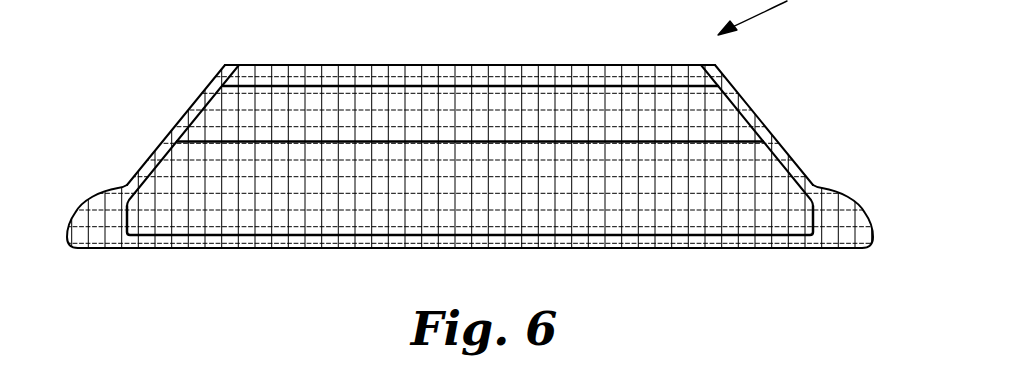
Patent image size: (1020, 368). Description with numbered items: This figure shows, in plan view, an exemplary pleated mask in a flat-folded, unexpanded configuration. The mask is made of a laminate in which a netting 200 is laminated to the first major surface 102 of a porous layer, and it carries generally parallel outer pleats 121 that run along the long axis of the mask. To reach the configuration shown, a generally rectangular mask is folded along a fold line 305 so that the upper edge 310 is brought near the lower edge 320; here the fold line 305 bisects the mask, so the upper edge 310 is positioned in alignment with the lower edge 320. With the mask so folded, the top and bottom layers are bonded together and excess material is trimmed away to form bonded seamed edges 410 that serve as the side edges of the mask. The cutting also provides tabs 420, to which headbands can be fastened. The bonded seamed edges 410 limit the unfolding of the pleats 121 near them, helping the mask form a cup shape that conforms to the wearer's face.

The first major surface 102 is at (478, 223).
The outer pleats 121 is at (697, 88).
The netting 200 is at (622, 210).
The fold line 305 is at (563, 64).
The upper edge 310 is at (187, 240).
The lower edge 320 is at (266, 240).
The bonded seamed edges 410 is at (195, 110).
The tabs 420 is at (97, 202).